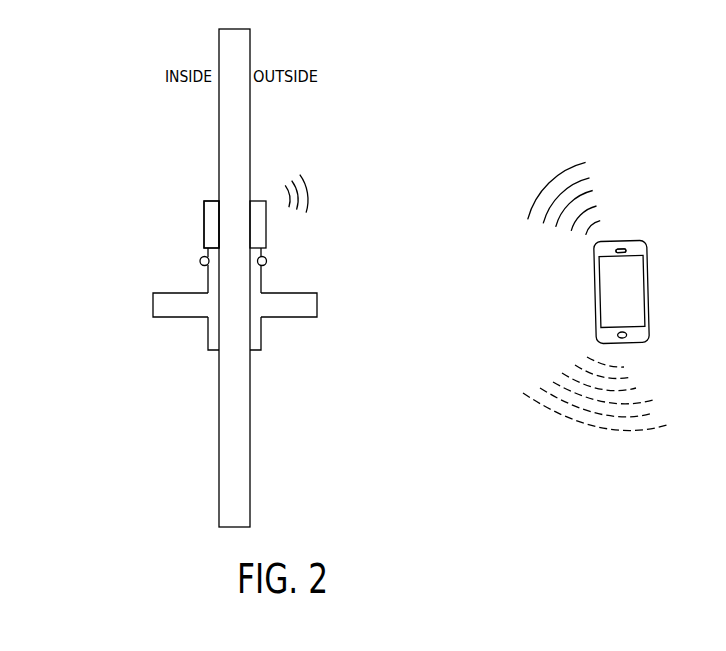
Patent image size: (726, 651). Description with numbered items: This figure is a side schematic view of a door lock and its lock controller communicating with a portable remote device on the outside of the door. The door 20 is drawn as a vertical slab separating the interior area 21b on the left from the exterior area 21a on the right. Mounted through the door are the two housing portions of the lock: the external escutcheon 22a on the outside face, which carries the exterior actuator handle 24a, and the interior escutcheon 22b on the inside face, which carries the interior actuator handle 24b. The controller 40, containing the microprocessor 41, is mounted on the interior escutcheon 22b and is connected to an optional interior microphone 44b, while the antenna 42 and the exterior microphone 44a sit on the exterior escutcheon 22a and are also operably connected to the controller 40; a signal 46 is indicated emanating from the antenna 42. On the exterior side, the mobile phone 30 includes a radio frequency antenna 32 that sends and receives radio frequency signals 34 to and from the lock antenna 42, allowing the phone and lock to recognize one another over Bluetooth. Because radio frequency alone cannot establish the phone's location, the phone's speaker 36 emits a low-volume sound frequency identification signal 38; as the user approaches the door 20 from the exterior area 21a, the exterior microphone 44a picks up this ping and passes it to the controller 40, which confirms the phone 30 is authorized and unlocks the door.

The door 20 is at (250, 450).
The exterior area 21a is at (403, 350).
The interior area 21b is at (126, 350).
The external escutcheon 22a is at (263, 322).
The interior escutcheon 22b is at (208, 333).
The exterior actuator handle 24a is at (317, 305).
The interior actuator handle 24b is at (153, 305).
The mobile phone 30 is at (650, 292).
The radio frequency antenna 32 is at (612, 240).
The radio frequency signals 34 is at (568, 202).
The speaker 36 is at (643, 345).
The sound frequency identification signal 38 is at (605, 402).
The controller 40 is at (209, 200).
The microprocessor 41 is at (206, 220).
The antenna 42 is at (261, 200).
The exterior microphone 44a is at (267, 262).
The interior microphone 44b is at (200, 261).
The sensor signal 46 is at (322, 207).